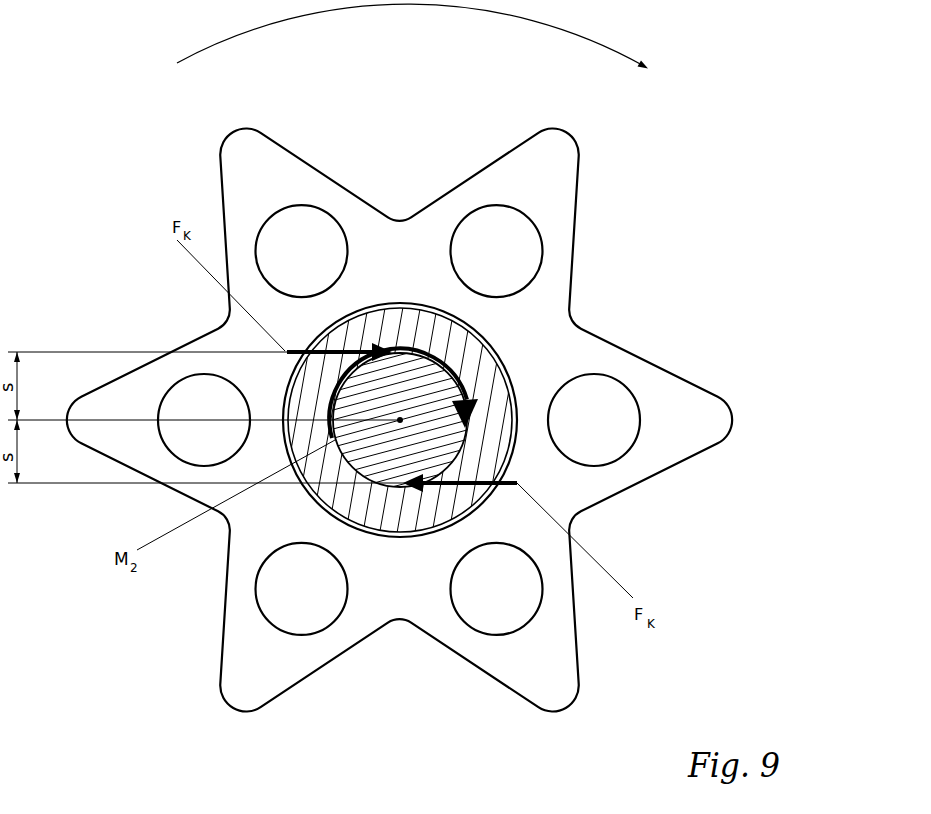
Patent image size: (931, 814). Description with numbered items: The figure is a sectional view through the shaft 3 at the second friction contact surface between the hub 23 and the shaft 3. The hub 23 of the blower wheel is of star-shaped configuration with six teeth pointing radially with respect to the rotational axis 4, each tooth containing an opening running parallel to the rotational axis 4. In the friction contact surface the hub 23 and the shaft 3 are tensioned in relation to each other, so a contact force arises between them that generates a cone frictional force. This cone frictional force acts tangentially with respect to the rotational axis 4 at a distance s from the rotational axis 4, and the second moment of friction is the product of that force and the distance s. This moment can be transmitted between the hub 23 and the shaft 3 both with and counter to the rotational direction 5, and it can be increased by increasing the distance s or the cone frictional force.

The shaft 3 is at (420, 408).
The rotational axis 4 is at (403, 417).
The rotational direction 5 is at (412, 36).
The hub 23 is at (658, 400).